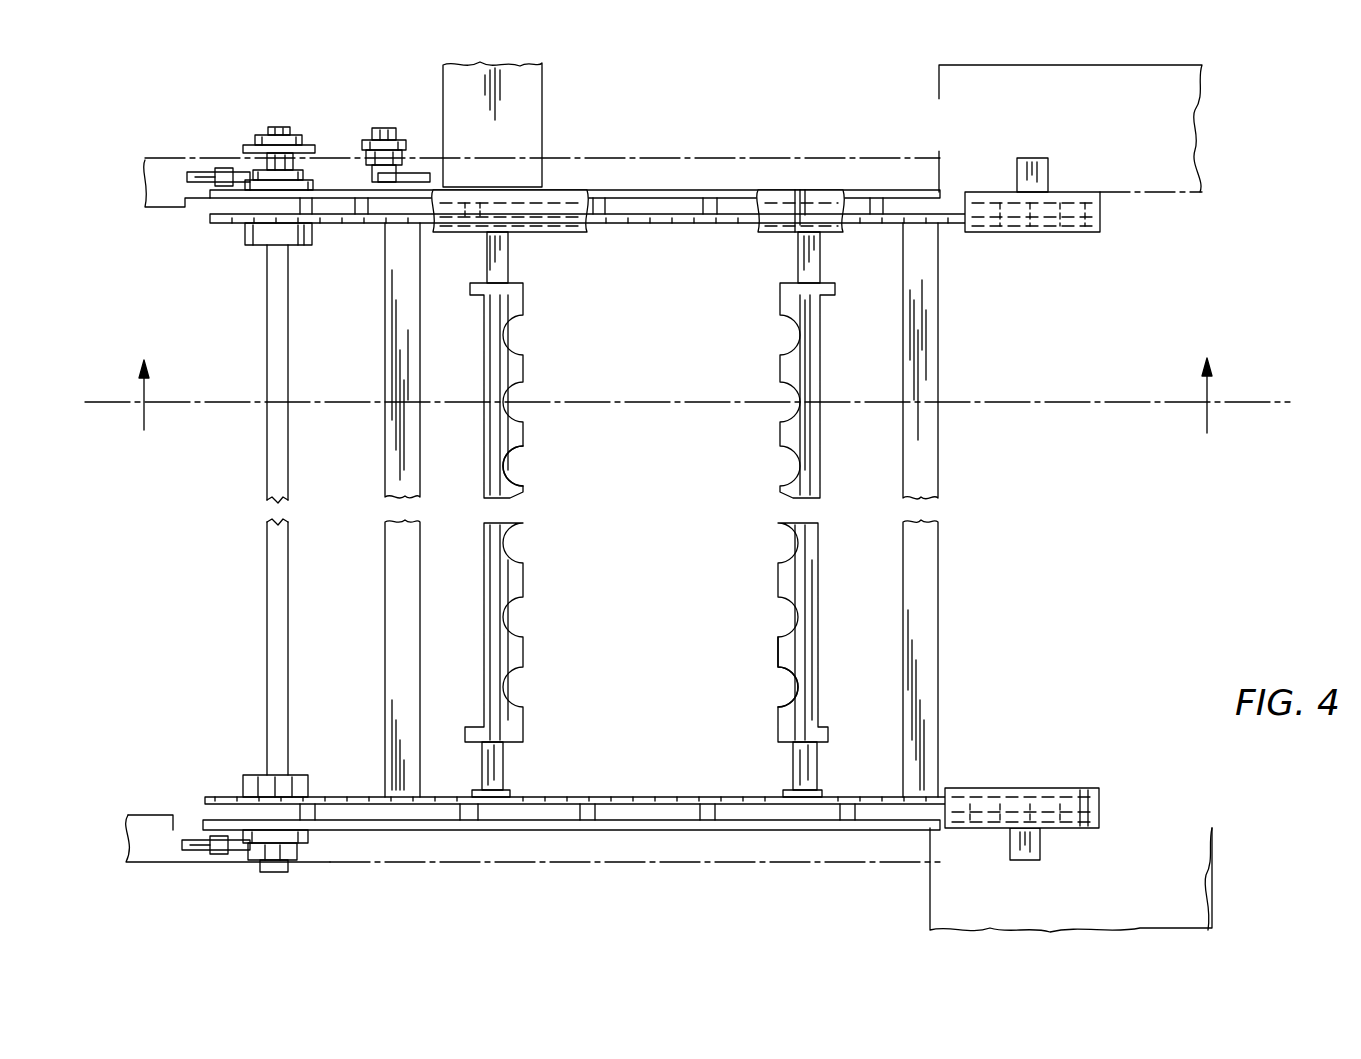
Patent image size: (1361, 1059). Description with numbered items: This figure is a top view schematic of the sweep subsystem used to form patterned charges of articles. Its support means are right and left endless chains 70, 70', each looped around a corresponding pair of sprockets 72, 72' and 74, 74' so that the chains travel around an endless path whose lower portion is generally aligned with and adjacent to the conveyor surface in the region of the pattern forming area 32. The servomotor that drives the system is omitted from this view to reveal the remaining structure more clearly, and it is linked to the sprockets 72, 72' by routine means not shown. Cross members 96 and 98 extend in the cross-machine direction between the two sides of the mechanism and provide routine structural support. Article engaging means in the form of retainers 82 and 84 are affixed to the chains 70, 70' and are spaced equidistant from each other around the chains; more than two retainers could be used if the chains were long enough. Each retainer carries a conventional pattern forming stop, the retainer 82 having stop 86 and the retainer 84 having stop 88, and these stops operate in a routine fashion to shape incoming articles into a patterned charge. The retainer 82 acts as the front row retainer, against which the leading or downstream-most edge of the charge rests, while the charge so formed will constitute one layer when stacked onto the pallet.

The pattern forming area 32 is at (657, 511).
The right endless chain 70 is at (650, 774).
The left endless chain 70' is at (590, 257).
The sprocket 72 is at (244, 808).
The sprocket 72' is at (251, 451).
The sprocket 74 is at (1022, 782).
The sprocket 74' is at (1032, 218).
The retainer 82 is at (808, 632).
The retainer 84 is at (498, 356).
The pattern forming stop 86 is at (775, 653).
The pattern forming stop 88 is at (518, 440).
The cross member 96 is at (386, 541).
The cross member 98 is at (922, 565).